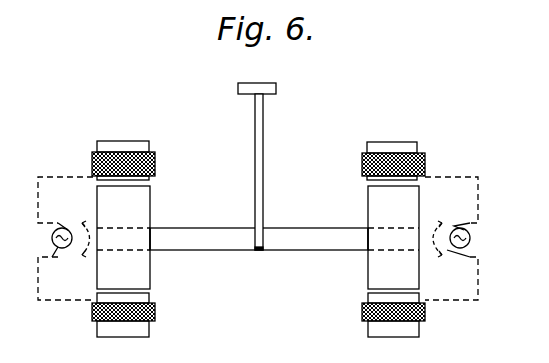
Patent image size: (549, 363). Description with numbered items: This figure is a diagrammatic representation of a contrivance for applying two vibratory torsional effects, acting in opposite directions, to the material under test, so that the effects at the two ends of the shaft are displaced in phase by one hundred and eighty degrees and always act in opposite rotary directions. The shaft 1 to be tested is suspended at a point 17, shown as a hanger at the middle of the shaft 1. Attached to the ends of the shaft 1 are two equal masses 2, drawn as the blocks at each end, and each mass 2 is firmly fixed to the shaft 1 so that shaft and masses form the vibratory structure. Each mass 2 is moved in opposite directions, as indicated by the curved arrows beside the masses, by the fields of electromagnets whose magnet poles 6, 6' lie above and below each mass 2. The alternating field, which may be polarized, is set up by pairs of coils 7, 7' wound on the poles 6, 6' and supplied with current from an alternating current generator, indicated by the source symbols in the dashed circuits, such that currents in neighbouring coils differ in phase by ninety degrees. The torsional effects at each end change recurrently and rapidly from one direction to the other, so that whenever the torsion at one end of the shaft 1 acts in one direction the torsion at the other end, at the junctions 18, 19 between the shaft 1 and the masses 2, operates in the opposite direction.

The shaft 1 is at (326, 243).
The mass 2 is at (140, 220).
The magnet pole 6 is at (258, 311).
The magnet pole 6' is at (257, 169).
The coil 7 is at (258, 322).
The coil 7' is at (258, 159).
The suspension point 17 is at (262, 252).
The left joint 18 is at (150, 249).
The right joint 19 is at (368, 250).